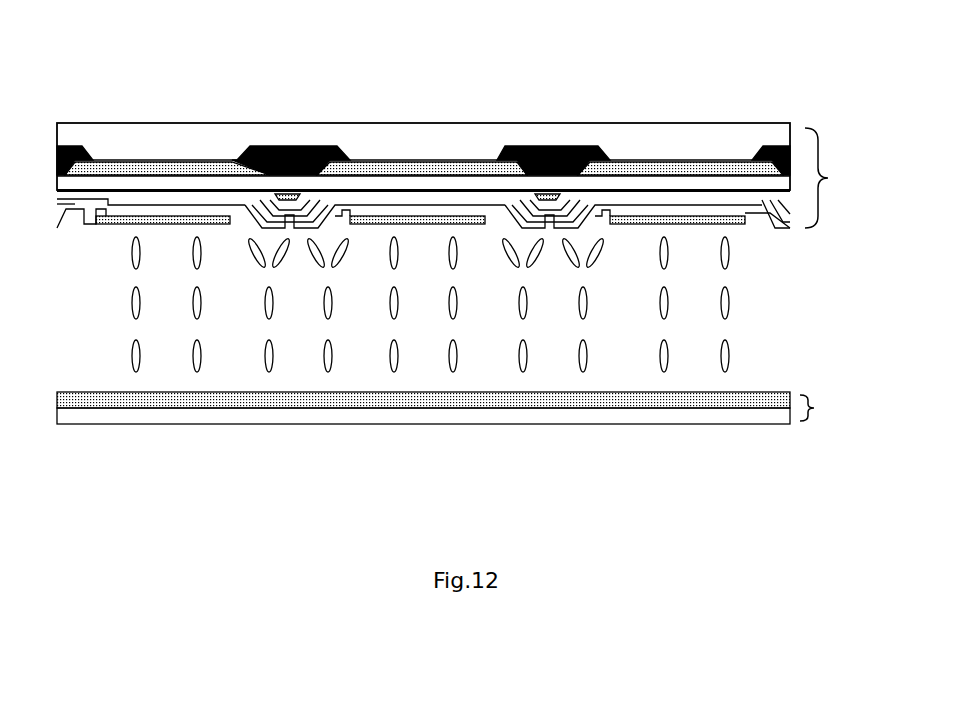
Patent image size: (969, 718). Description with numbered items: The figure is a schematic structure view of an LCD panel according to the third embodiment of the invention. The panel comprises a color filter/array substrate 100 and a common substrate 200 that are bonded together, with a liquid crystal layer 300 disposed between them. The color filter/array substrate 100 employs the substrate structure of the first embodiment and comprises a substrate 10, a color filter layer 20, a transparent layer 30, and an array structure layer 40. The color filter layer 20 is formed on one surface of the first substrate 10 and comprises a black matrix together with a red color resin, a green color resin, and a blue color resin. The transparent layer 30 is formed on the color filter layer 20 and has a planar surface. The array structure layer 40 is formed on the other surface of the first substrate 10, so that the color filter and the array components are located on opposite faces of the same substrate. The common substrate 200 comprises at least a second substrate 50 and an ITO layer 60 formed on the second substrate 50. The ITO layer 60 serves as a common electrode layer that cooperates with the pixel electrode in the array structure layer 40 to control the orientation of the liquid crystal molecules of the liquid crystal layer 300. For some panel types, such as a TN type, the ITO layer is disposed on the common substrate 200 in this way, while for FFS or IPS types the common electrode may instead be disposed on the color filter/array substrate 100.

The substrate 10 is at (423, 126).
The color filter layer 20 is at (423, 118).
The transparent layer 30 is at (423, 125).
The array structure layer 40 is at (423, 144).
The second substrate 50 is at (423, 447).
The ITO layer 60 is at (423, 439).
The color filter/array substrate 100 is at (466, 144).
The common substrate 200 is at (460, 439).
The liquid crystal layer 300 is at (435, 361).